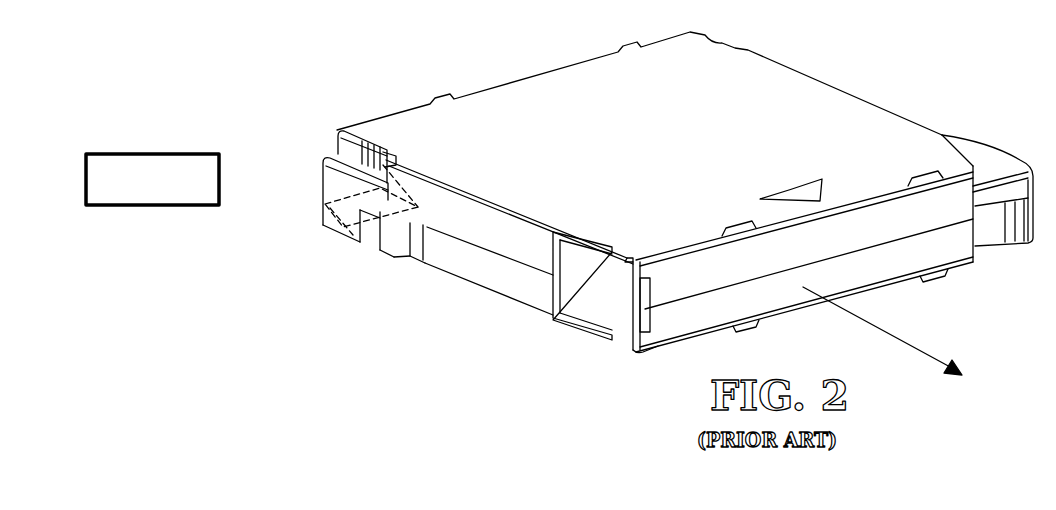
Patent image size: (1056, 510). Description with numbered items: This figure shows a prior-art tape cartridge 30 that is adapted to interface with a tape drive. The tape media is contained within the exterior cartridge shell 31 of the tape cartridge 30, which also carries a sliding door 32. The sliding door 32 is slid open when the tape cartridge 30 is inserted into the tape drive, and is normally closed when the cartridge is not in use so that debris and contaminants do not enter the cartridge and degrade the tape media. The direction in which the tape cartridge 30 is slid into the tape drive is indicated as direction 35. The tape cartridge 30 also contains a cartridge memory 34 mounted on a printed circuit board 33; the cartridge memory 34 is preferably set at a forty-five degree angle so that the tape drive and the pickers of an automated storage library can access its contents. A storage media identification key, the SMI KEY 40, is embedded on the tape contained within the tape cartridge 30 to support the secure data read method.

The tape cartridge 30 is at (930, 77).
The exterior cartridge shell 31 is at (563, 66).
The sliding door 32 is at (590, 292).
The printed circuit board 33 is at (333, 224).
The cartridge memory 34 is at (388, 200).
The direction 35 is at (878, 331).
The storage media identification key (SMI KEY) 40 is at (220, 180).